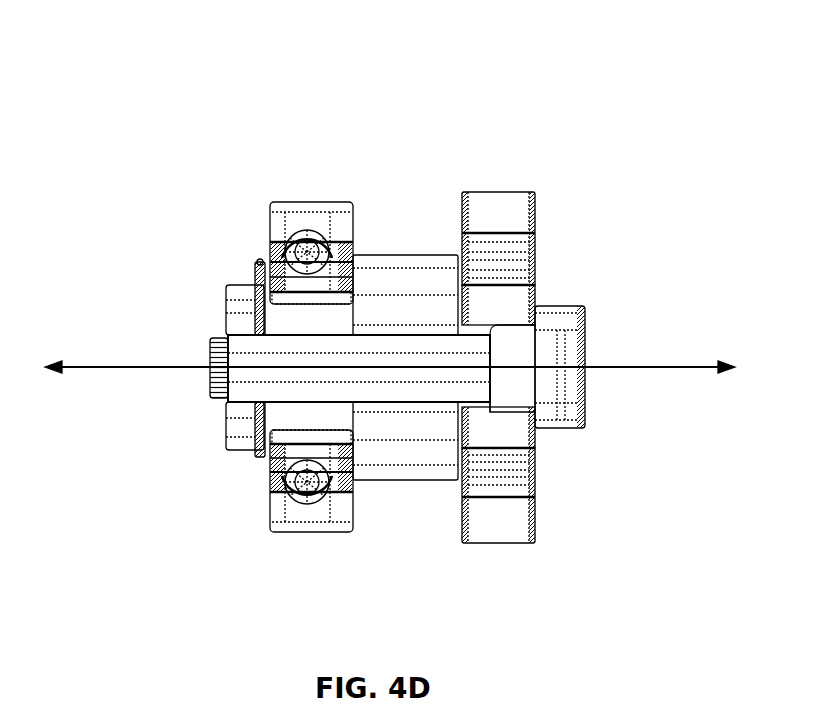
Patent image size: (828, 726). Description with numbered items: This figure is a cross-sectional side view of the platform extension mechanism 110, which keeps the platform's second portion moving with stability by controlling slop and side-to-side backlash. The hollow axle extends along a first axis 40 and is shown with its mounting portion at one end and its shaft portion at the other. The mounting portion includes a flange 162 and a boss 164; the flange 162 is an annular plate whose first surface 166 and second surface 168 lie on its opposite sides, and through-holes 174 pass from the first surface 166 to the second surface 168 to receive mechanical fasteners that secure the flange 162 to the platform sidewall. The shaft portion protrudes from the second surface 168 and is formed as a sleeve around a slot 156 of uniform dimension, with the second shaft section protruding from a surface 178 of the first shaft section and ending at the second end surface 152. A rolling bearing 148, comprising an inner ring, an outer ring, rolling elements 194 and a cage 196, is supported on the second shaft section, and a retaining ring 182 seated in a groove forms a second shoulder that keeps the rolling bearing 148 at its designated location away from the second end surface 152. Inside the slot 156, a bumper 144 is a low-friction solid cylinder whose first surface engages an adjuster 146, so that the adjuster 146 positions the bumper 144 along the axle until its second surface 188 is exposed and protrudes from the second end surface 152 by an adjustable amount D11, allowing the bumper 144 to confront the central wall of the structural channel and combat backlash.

The platform extension mechanism 110 is at (452, 78).
The first axis 40 is at (697, 366).
The bumper 144 is at (228, 336).
The second surface 188 is at (210, 390).
The second end surface 152 is at (226, 418).
The retaining ring 182 is at (260, 262).
The rolling bearing 148 is at (312, 206).
The rolling elements 194 is at (310, 482).
The cage 196 is at (300, 480).
The surface 178 is at (355, 274).
The flange 162 is at (493, 207).
The first surface 166 is at (528, 213).
The boss 164 is at (566, 336).
The through-holes 174 is at (508, 472).
The second surface 168 is at (462, 522).
The slot 156 is at (580, 352).
The adjuster 146 is at (527, 383).
The protrusion amount D11 is at (208, 416).